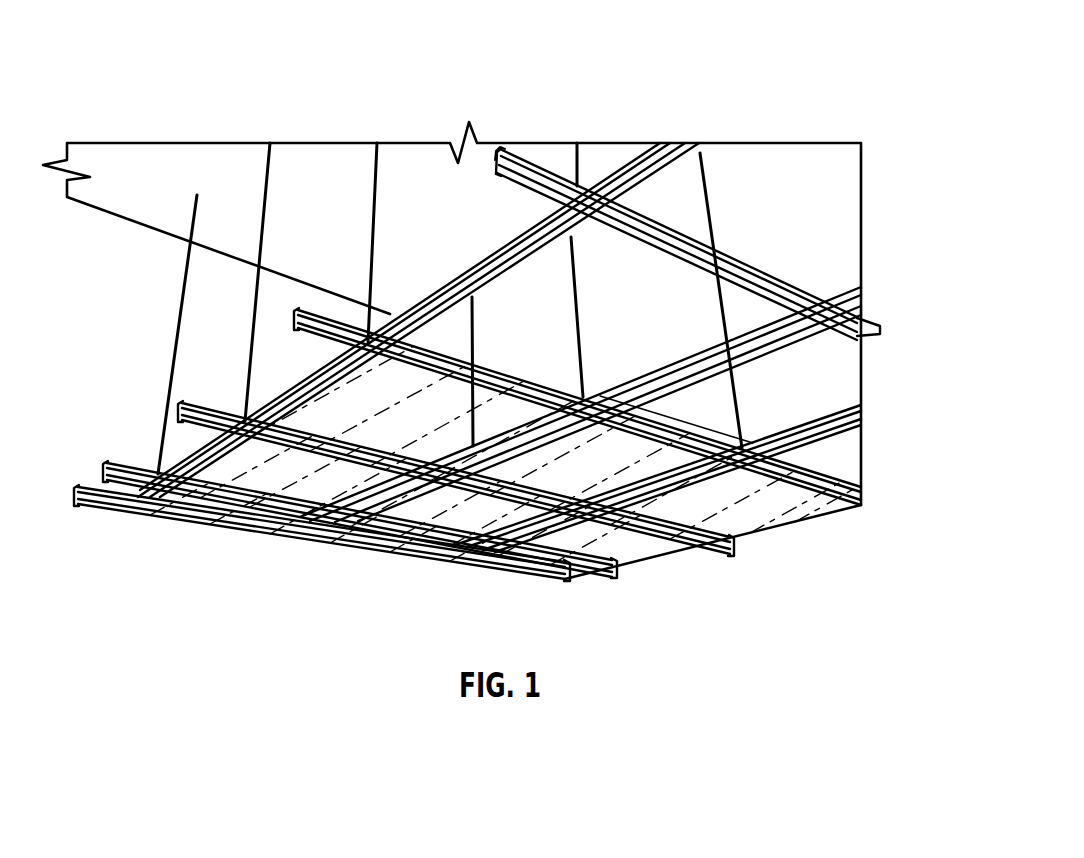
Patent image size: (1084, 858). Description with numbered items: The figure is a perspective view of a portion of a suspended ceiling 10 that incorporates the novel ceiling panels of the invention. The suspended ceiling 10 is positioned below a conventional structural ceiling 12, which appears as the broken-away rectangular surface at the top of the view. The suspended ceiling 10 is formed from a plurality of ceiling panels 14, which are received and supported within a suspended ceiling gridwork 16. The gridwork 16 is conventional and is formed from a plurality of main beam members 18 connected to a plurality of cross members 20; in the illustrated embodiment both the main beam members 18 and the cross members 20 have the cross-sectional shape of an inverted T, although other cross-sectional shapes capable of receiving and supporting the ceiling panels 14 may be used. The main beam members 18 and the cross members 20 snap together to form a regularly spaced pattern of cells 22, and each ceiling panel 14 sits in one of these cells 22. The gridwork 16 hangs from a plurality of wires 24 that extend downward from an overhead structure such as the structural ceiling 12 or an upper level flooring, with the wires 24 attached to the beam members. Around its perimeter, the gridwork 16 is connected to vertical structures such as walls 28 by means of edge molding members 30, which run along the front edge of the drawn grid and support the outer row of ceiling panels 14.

The suspended ceiling 10 is at (880, 82).
The structural ceiling 12 is at (137, 162).
The ceiling panel 14 is at (297, 488).
The suspended ceiling gridwork 16 is at (789, 281).
The main beam member 18 is at (797, 336).
The cross member 20 is at (523, 155).
The cell 22 is at (343, 390).
The wire 24 is at (177, 327).
The wall 28 is at (125, 385).
The edge molding member 30 is at (105, 507).